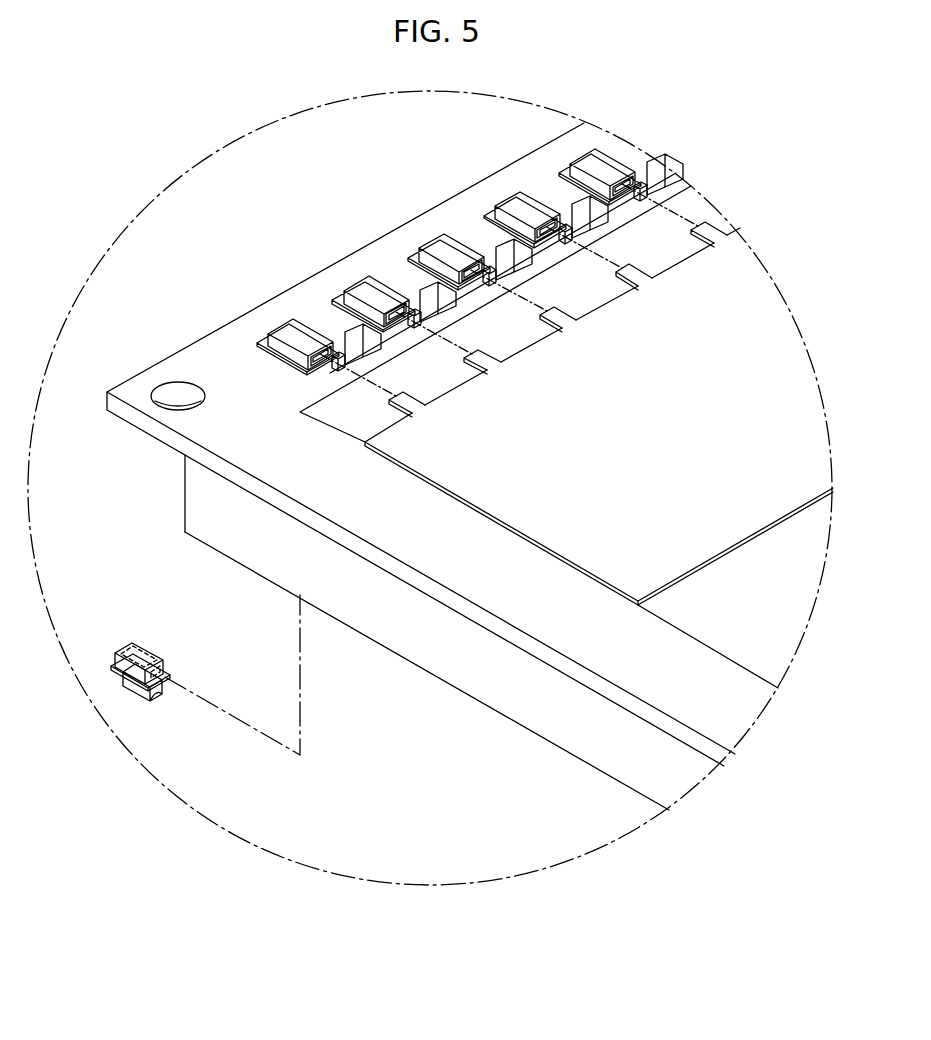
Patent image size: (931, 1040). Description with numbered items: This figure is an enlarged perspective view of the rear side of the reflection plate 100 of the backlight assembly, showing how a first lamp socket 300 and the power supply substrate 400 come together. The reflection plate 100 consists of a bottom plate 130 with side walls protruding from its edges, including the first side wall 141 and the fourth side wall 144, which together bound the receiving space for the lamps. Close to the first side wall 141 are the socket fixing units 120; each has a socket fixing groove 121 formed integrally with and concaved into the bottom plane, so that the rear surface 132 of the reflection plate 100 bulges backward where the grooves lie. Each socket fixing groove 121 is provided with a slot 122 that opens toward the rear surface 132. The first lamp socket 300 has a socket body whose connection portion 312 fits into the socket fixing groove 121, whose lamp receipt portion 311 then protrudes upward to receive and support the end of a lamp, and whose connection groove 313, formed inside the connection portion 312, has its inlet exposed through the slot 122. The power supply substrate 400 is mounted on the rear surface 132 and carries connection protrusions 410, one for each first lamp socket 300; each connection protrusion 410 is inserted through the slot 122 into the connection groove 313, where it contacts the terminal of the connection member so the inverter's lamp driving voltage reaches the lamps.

The reflection plate 100 is at (397, 636).
The bottom plate 130 is at (478, 444).
The rear surface 132 is at (764, 639).
The first side wall 141 is at (185, 497).
The fourth side wall 144 is at (473, 677).
The socket fixing unit 120 is at (452, 303).
The socket fixing groove 121 is at (311, 333).
The slot 122 is at (330, 366).
The power supply substrate 400 is at (566, 372).
The connection protrusion 410 is at (703, 229).
The first lamp socket 300 is at (122, 684).
The lamp receipt portion 311 is at (145, 692).
The connection portion 312 is at (125, 657).
The connection groove 313 is at (145, 658).